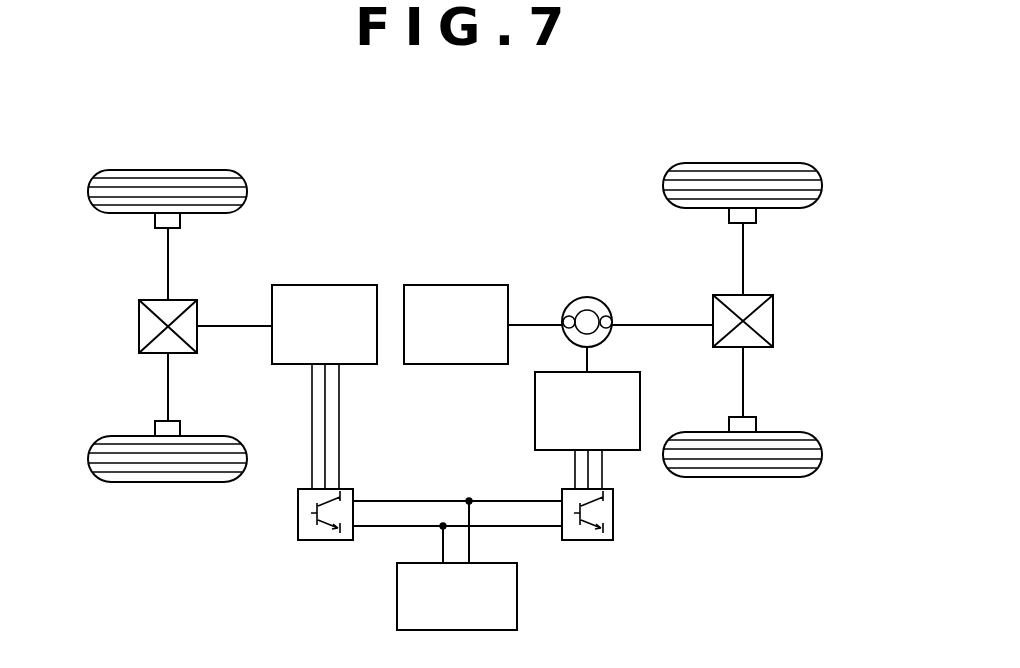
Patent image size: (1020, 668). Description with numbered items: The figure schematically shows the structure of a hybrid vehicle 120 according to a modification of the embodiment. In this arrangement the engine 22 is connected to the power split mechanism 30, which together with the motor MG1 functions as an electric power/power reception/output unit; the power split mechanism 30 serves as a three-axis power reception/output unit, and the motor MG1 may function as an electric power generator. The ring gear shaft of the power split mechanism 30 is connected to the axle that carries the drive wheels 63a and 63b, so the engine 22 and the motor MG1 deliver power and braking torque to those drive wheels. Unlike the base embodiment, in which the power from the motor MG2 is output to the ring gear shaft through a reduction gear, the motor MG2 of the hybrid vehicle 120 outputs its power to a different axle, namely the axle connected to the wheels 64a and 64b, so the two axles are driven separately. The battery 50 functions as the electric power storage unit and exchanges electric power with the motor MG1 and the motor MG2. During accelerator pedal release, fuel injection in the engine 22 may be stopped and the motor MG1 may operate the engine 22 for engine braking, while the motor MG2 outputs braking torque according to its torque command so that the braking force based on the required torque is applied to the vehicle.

The hybrid vehicle 120 is at (468, 147).
The wheel 64a is at (167, 169).
The wheel 64b is at (167, 484).
The drive wheel 63a is at (744, 163).
The drive wheel 63b is at (742, 479).
The motor MG2 is at (327, 283).
The motor MG1 is at (535, 409).
The engine 22 is at (459, 283).
The power split mechanism 30 is at (590, 296).
The battery 50 is at (517, 595).